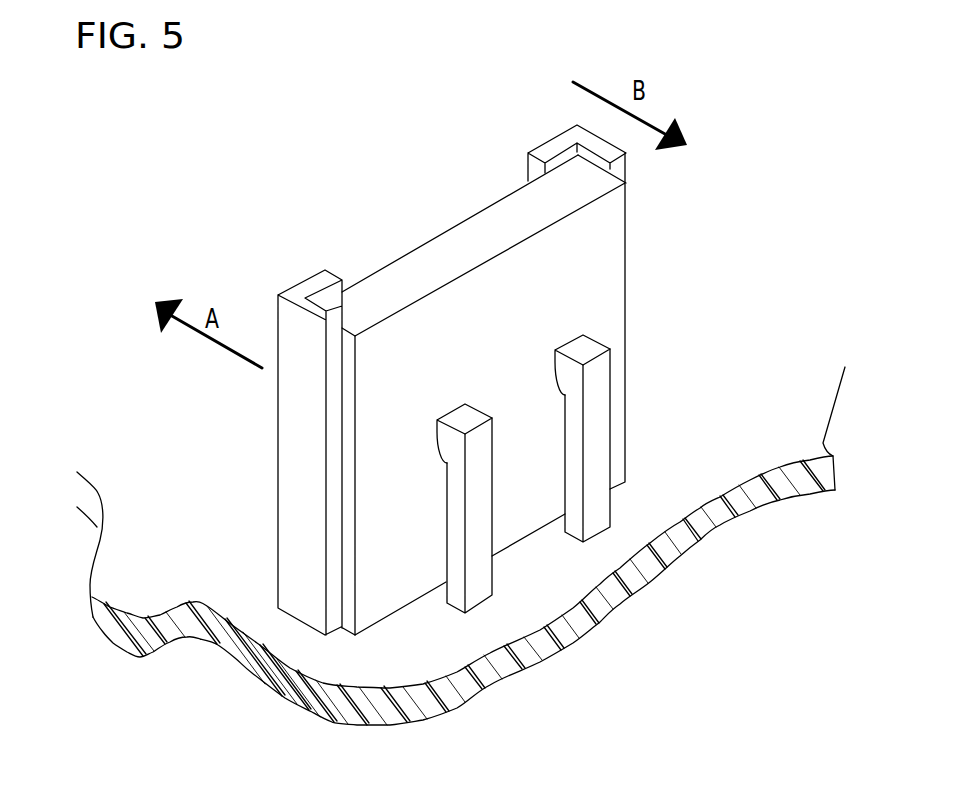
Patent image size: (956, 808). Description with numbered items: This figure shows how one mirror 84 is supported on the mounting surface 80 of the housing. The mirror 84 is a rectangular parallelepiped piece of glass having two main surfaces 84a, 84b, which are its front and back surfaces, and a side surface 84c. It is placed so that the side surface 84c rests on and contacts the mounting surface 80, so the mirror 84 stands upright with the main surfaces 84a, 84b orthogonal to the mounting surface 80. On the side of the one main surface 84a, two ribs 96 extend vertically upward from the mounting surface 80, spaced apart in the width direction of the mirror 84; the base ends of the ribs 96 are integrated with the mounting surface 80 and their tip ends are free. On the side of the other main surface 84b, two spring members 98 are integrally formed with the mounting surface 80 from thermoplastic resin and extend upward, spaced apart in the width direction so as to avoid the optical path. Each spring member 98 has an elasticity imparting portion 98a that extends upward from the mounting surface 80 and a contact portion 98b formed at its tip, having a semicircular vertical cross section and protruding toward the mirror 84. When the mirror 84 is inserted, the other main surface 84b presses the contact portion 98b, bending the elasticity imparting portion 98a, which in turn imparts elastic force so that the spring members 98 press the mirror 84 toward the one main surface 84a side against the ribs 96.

The mounting surface 80 is at (145, 577).
The mirror 84 is at (543, 348).
The main surface 84a is at (500, 198).
The main surface 84b is at (592, 247).
The side surface 84c is at (398, 290).
The rib 96 is at (308, 293).
The spring member 98 is at (473, 439).
The elasticity imparting portion 98a is at (458, 490).
The contact portion 98b is at (428, 428).